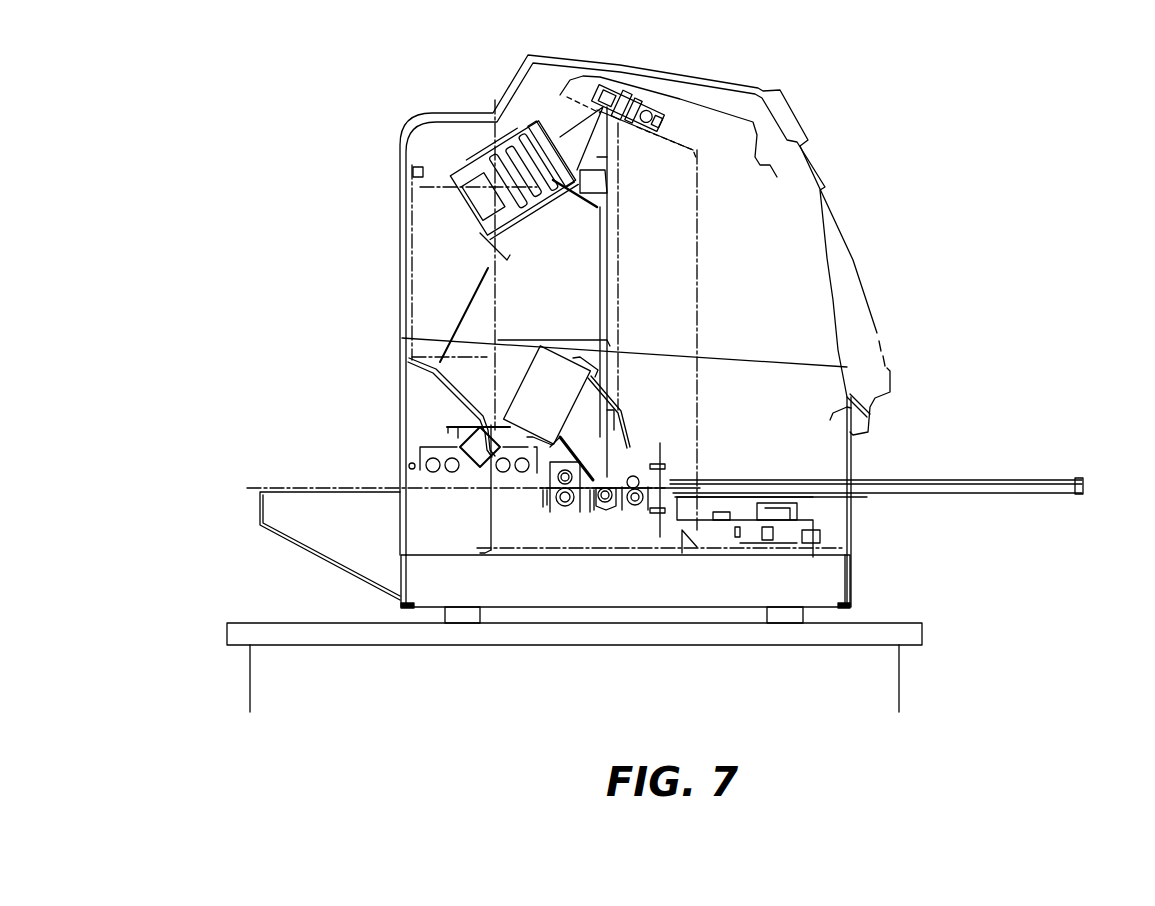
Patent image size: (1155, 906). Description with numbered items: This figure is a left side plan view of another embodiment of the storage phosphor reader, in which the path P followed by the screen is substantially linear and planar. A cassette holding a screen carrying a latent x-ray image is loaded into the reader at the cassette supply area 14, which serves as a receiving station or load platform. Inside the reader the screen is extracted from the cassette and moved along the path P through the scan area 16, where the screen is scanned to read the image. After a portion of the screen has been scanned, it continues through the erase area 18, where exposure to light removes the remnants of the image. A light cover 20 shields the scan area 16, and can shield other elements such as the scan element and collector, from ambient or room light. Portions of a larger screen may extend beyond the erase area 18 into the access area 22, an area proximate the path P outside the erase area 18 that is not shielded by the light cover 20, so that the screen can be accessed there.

The cassette supply area 14 is at (898, 464).
The scan area 16 is at (568, 521).
The erase area 18 is at (437, 447).
The light cover 20 is at (488, 137).
The access area 22 is at (357, 470).
The path P is at (240, 488).